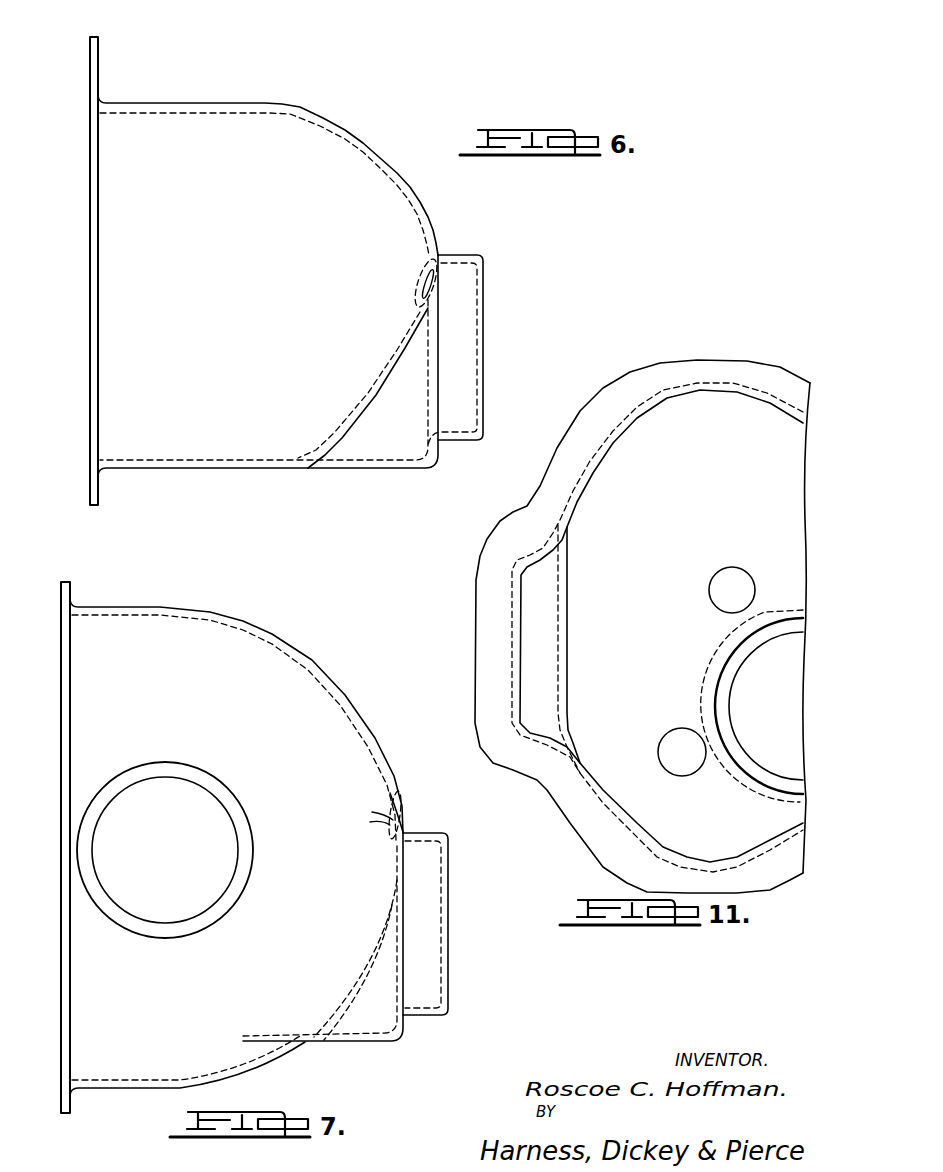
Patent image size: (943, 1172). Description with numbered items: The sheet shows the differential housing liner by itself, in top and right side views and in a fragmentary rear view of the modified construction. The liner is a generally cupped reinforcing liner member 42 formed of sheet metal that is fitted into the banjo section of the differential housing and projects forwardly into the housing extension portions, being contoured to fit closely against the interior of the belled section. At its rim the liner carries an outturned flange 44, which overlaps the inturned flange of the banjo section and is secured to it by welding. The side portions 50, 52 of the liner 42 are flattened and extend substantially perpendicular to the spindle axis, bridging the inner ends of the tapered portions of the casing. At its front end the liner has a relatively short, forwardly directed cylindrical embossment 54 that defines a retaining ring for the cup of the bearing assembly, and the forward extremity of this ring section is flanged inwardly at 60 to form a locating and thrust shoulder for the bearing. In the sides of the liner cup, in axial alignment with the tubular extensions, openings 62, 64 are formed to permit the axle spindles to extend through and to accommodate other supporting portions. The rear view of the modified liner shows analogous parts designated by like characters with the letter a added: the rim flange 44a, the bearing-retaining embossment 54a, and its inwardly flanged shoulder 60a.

In FIG. 6, the reinforcing liner member 42 is at (240, 279).
In FIG. 7, the reinforcing liner member 42 is at (175, 607).
In FIG. 6, the outturned flange 44 is at (90, 483).
In FIG. 7, the outturned flange 44 is at (70, 600).
In FIG. 11, the outturned flange 44a is at (703, 360).
In FIG. 6, the side portion of the liner 50 is at (292, 103).
In FIG. 6, the side portion of the liner 52 is at (206, 468).
In FIG. 7, the side portion of the liner 52 is at (212, 722).
In FIG. 6, the cylindrical embossment 54 is at (444, 442).
In FIG. 7, the cylindrical embossment 54 is at (415, 1020).
In FIG. 11, the cylindrical embossment 54a is at (752, 612).
In FIG. 6, the inturned flange 60 is at (483, 424).
In FIG. 7, the inturned flange 60 is at (448, 1000).
In FIG. 11, the inturned flange 60a is at (730, 688).
In FIG. 6, the opening 62 is at (270, 110).
In FIG. 7, the opening 62 is at (230, 838).
In FIG. 6, the opening 64 is at (291, 469).
In FIG. 7, the opening 64 is at (232, 800).